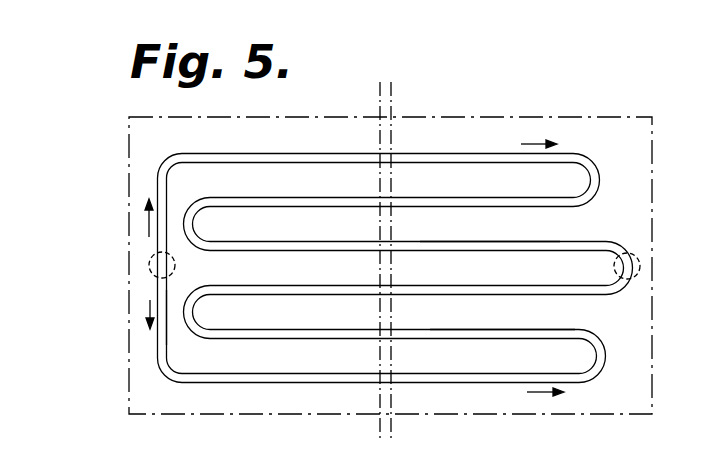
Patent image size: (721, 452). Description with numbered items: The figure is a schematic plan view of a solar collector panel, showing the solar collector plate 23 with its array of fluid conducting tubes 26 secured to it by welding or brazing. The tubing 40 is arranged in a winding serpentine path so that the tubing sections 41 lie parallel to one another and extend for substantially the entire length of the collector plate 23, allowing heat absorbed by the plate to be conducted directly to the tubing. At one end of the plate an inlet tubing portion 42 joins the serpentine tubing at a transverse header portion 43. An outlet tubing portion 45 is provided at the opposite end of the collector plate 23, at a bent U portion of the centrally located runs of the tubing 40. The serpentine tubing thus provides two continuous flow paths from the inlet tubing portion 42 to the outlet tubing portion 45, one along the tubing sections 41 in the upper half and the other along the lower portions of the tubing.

The solar collector plate 23 is at (573, 413).
The fluid conducting tubes 26 is at (303, 385).
The tubing 40 is at (532, 328).
The tubing sections 41 is at (522, 243).
The inlet tubing portion 42 is at (155, 263).
The transverse header portion 43 is at (160, 343).
The outlet tubing portion 45 is at (638, 258).